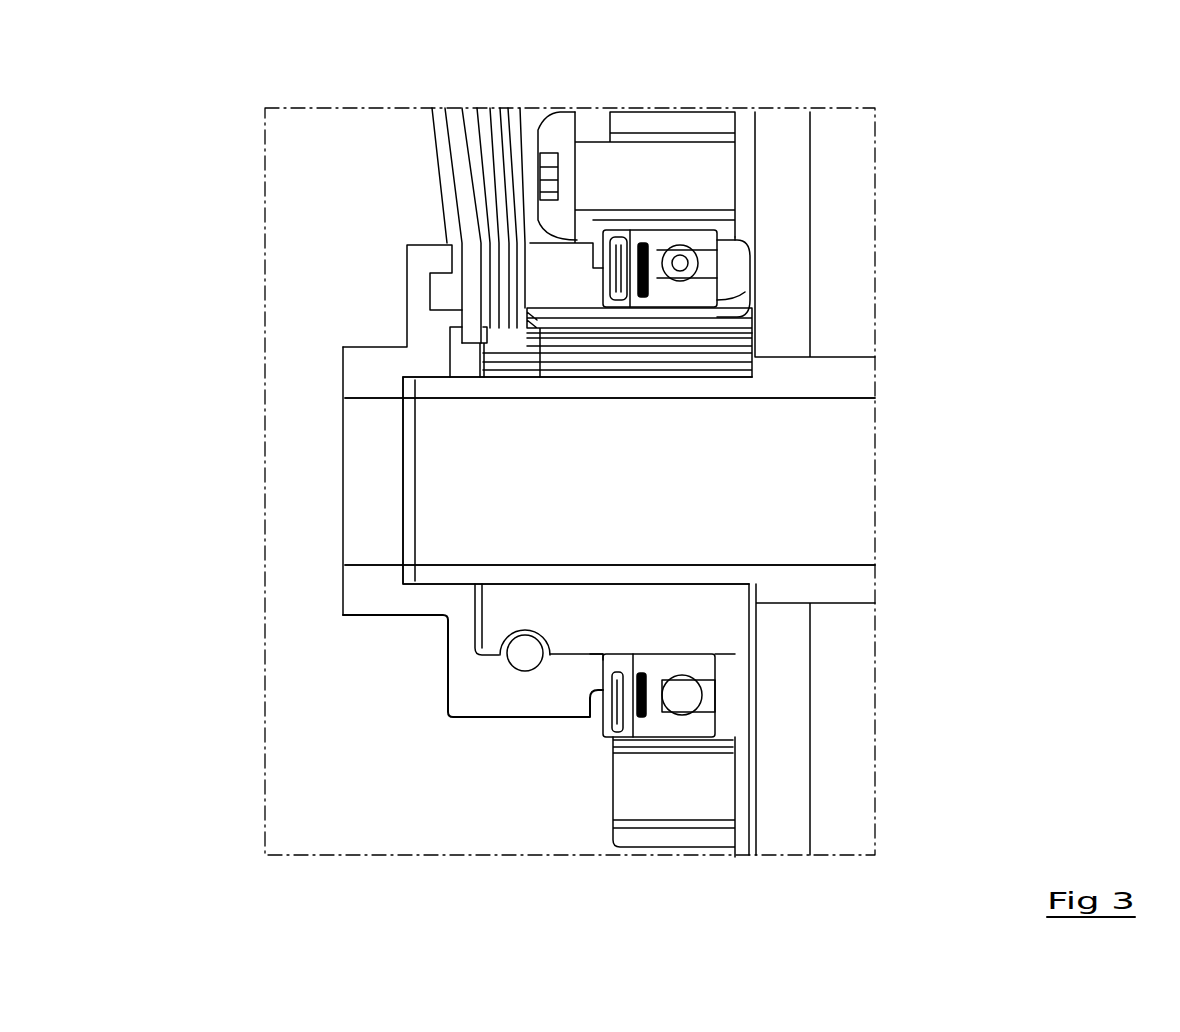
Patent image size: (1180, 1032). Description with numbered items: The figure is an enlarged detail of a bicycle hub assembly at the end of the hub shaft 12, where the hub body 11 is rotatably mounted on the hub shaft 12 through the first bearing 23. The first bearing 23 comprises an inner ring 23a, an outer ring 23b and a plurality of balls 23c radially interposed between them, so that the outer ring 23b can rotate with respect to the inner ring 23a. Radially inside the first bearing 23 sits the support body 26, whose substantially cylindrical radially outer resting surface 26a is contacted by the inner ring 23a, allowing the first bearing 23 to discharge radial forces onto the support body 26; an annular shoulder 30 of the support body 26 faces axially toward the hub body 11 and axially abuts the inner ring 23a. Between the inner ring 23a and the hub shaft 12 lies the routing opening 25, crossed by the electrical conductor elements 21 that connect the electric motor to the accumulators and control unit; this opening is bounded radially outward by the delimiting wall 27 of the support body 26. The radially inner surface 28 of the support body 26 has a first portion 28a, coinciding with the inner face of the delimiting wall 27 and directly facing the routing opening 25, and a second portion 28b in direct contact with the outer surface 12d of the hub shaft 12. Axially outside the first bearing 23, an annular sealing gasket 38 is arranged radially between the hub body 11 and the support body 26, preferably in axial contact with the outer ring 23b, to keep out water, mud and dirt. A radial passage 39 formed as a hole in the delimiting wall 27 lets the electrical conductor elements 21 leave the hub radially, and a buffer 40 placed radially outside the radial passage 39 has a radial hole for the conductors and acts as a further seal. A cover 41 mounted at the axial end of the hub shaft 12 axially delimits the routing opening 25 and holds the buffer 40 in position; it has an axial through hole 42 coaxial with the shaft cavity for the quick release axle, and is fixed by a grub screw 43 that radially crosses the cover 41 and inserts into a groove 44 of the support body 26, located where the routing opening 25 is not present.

The hub body 11 is at (720, 783).
The hub shaft 12 is at (853, 603).
The outer surface 12d is at (445, 588).
The electrical conductor elements 21 is at (463, 173).
The first bearing 23 is at (700, 703).
The inner ring 23a is at (658, 300).
The outer ring 23b is at (693, 233).
The balls 23c is at (678, 257).
The routing opening 25 is at (725, 345).
The support body 26 is at (747, 280).
The radially outer resting surface 26a is at (578, 655).
The delimiting wall 27 is at (613, 318).
The radially inner surface 28 is at (537, 584).
The first portion 28a is at (667, 323).
The second portion 28b is at (638, 584).
The shoulder 30 is at (737, 267).
The annular sealing gasket 38 is at (617, 240).
The radial passage 39 is at (490, 347).
The buffer 40 is at (548, 263).
The cover 41 is at (360, 370).
The axial through hole 42 is at (370, 398).
The grub screw 43 is at (527, 663).
The groove 44 is at (502, 637).